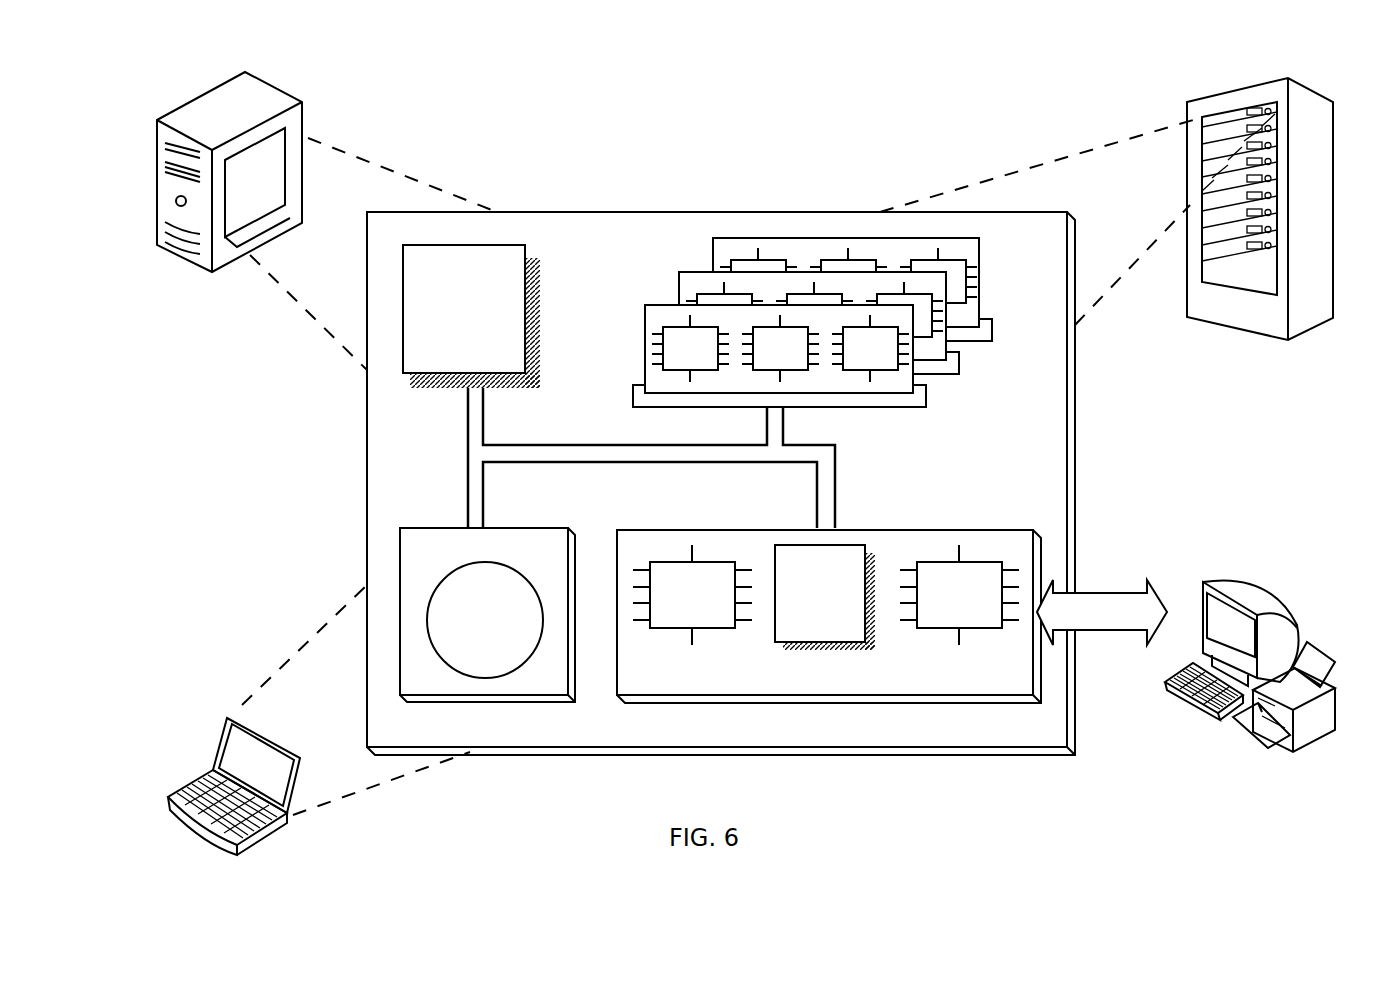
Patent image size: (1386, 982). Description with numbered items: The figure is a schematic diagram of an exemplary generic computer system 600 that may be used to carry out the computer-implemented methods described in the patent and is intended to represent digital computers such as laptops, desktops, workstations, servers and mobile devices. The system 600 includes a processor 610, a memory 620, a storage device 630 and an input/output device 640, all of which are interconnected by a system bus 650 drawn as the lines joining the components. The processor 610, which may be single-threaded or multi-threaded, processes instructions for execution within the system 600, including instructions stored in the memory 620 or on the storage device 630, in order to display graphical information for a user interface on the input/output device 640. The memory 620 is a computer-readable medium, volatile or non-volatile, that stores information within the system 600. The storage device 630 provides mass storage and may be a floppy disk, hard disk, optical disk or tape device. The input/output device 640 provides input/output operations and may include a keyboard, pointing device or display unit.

The generic computer system 600 is at (682, 87).
The processor 610 is at (483, 364).
The memory 620 is at (986, 373).
The storage device 630 is at (526, 690).
The input/output device 640 is at (1205, 585).
The system bus 650 is at (647, 462).